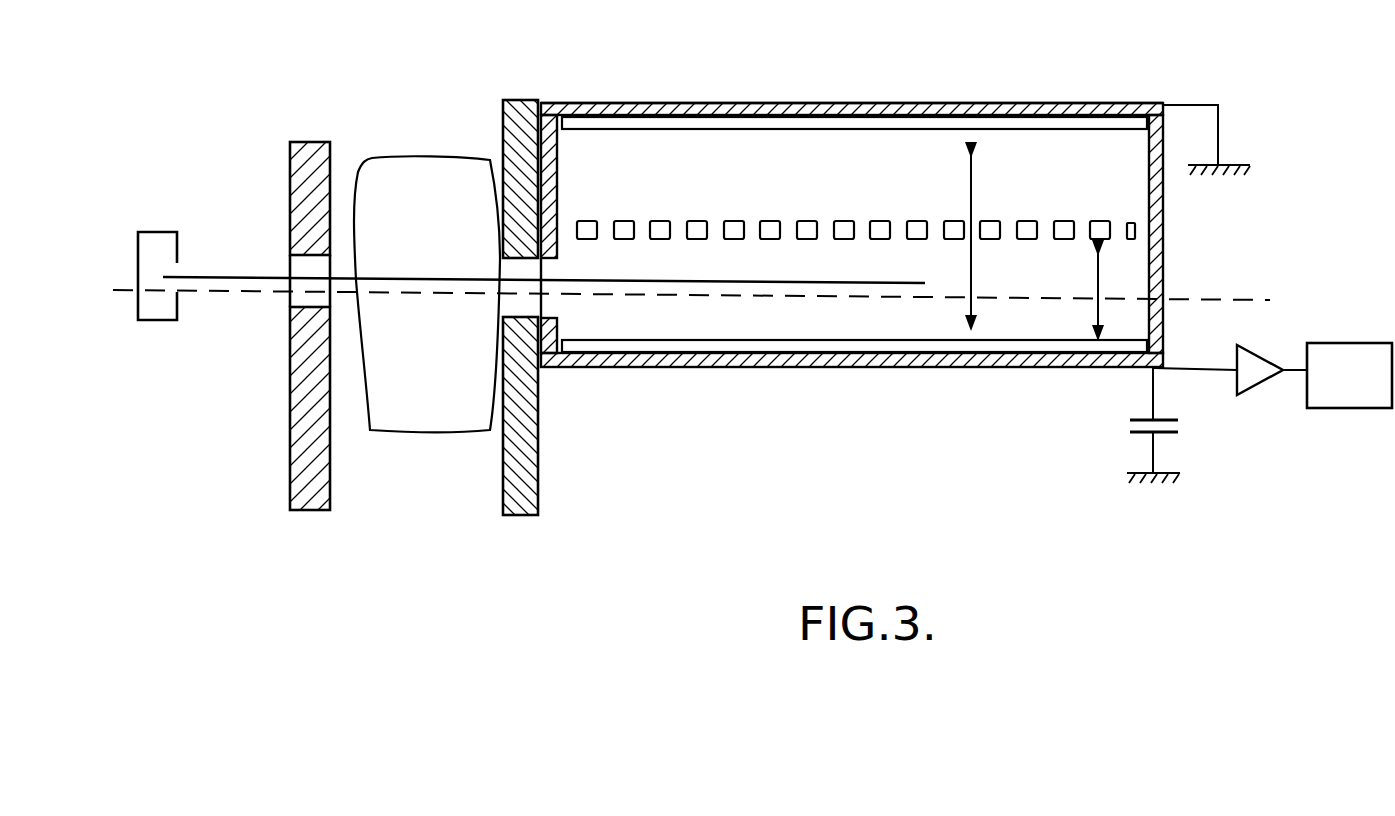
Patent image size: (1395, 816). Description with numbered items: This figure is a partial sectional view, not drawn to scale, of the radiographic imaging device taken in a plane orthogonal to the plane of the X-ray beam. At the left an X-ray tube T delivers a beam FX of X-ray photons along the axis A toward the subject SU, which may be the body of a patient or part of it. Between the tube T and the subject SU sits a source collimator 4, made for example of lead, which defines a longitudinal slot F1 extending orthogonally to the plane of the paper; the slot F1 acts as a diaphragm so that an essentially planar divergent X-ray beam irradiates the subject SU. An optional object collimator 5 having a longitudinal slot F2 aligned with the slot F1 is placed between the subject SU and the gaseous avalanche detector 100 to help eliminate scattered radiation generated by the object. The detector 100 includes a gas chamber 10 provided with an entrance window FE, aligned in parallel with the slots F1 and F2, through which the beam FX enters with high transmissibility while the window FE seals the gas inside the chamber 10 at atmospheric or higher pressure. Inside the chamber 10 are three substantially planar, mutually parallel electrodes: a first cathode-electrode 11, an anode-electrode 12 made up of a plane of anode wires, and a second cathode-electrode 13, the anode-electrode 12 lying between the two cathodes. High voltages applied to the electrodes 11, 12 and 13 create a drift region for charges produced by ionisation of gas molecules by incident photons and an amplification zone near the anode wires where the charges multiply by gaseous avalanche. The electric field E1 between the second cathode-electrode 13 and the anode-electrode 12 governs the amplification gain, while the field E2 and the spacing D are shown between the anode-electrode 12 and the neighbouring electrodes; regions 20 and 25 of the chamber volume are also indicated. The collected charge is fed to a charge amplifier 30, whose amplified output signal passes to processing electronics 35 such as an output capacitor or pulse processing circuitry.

The gaseous avalanche detector 100 is at (781, 108).
The gas chamber 10 is at (1158, 197).
The first cathode-electrode 11 is at (1028, 123).
The anode-electrode 12 is at (894, 246).
The second cathode-electrode 13 is at (713, 345).
The ionization region 20 is at (1015, 312).
The gas filled chamber volume 25 is at (823, 288).
The charge amplifier 30 is at (1248, 380).
The processing unit 35 is at (1340, 353).
The source collimator 4 is at (310, 455).
The object collimator 5 is at (522, 482).
The X-ray tube T is at (177, 268).
The longitudinal slot F1 is at (354, 179).
The longitudinal slot F2 is at (485, 188).
The entrance window FE is at (550, 305).
The X-ray beam FX is at (550, 271).
The subject Su is at (423, 413).
The electric field E1 is at (987, 271).
The second electric field E2 is at (988, 185).
The distance D is at (1107, 290).
The axis A is at (687, 277).